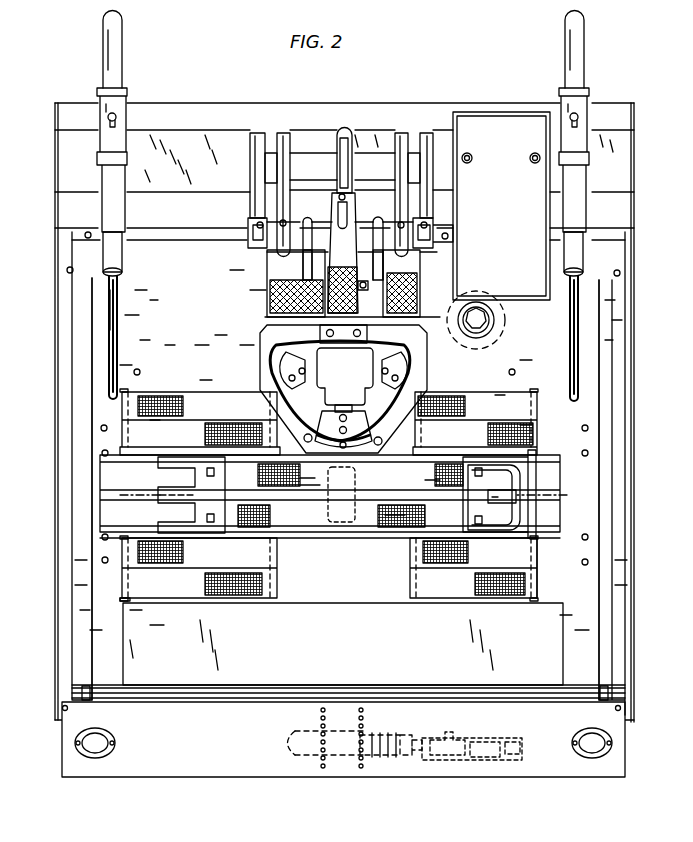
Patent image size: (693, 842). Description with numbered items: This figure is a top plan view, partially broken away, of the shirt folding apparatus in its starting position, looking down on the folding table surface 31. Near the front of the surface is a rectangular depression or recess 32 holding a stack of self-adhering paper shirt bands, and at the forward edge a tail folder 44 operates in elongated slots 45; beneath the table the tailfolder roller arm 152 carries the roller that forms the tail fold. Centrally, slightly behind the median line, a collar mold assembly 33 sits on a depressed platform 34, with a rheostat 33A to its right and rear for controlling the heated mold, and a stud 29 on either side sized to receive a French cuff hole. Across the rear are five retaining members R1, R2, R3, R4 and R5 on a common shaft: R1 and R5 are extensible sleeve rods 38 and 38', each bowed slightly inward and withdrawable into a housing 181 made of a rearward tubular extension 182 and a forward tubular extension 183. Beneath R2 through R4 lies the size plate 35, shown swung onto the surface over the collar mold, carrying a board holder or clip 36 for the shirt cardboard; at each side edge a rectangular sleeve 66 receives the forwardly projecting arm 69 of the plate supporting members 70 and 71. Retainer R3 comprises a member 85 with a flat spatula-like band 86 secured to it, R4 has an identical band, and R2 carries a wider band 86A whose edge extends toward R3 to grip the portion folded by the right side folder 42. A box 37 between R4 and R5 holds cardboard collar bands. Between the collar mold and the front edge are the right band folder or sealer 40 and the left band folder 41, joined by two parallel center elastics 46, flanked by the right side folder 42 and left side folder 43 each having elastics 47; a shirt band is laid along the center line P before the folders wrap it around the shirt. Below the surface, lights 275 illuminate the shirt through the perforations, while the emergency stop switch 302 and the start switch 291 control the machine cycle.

The rearward tubular extension 182 is at (566, 37).
The housing 181 is at (582, 139).
The forward tubular extension 183 is at (122, 207).
The sleeve rod 38 is at (133, 337).
The sleeve rod 38' is at (555, 338).
The retaining member R1 is at (118, 296).
The retaining member R2 is at (270, 298).
The retaining member R3 is at (342, 282).
The retaining member R4 is at (405, 285).
The retaining member R5 is at (572, 328).
The member 70 is at (262, 160).
The forwardly projecting arm 69 is at (452, 178).
The member 71 is at (428, 160).
The rectangular sleeve 66 is at (450, 217).
The member 85 is at (345, 163).
The band 86 is at (412, 300).
The band 86A is at (275, 282).
The board holder or clip 36 is at (364, 280).
The size plate 35 is at (270, 318).
The box 37 is at (520, 110).
The rheostat 33A is at (496, 318).
The collar mold assembly 33 is at (256, 355).
The depressed platform 34 is at (425, 350).
The stud 29 is at (508, 373).
The elastics 47 is at (329, 495).
The center elastics 46 is at (330, 496).
The center line P is at (338, 494).
The left band folder 41 is at (192, 495).
The right side folder 42 is at (533, 480).
The right band folder or sealer 40 is at (502, 485).
The left side folder 43 is at (127, 585).
The folding table surface 31 is at (556, 568).
The elongated apertures or slots 45 is at (605, 640).
The rectangular depression or recess 32 is at (343, 644).
The tail folder 44 is at (292, 694).
The tailfolder roller arm 152 is at (606, 700).
The emergency stop switch 302 is at (108, 740).
The start switch 291 is at (596, 748).
The lights 275 is at (292, 738).